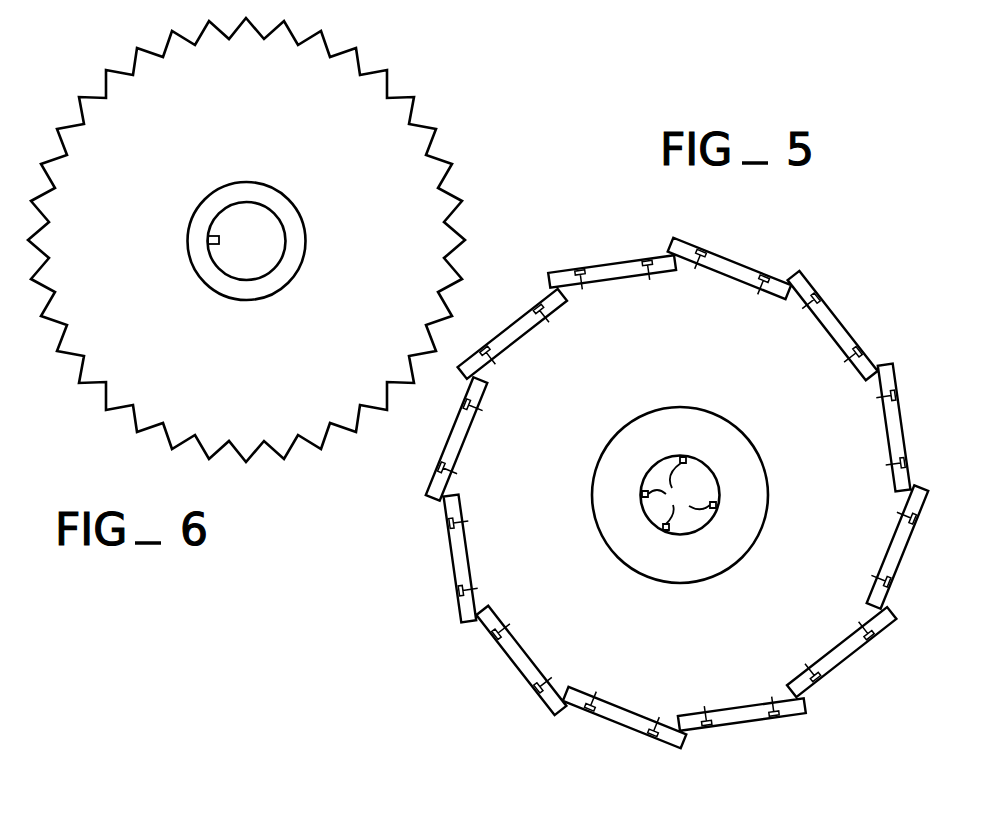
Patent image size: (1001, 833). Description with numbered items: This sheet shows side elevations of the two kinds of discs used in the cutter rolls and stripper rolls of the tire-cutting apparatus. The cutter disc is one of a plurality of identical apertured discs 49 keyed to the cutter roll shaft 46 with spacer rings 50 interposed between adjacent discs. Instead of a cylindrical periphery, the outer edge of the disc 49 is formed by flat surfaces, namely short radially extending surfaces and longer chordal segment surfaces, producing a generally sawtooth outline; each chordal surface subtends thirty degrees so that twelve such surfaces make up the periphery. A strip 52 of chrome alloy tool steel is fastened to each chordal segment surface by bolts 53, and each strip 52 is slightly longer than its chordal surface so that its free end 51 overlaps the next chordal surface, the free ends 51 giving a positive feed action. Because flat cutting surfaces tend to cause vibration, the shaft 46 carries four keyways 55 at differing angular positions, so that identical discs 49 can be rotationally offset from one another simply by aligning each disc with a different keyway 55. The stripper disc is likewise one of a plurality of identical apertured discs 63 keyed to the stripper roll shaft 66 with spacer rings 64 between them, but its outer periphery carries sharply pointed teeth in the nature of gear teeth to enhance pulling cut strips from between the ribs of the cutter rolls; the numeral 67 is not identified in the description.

In FIG. 5, the shaft 46 is at (705, 485).
In FIG. 5, the apertured disc 49 is at (648, 471).
In FIG. 5, the spacer ring 50 is at (748, 477).
In FIG. 5, the free end 51 is at (681, 237).
In FIG. 5, the strip 52 is at (629, 266).
In FIG. 5, the bolt 53 is at (586, 292).
In FIG. 5, the keyway 55 is at (679, 493).
In FIG. 6, the apertured disc 63 is at (388, 120).
In FIG. 6, the spacer ring 64 is at (285, 193).
In FIG. 6, the shaft 66 is at (272, 237).
In FIG. 6, the gear teeth 67 is at (426, 6).